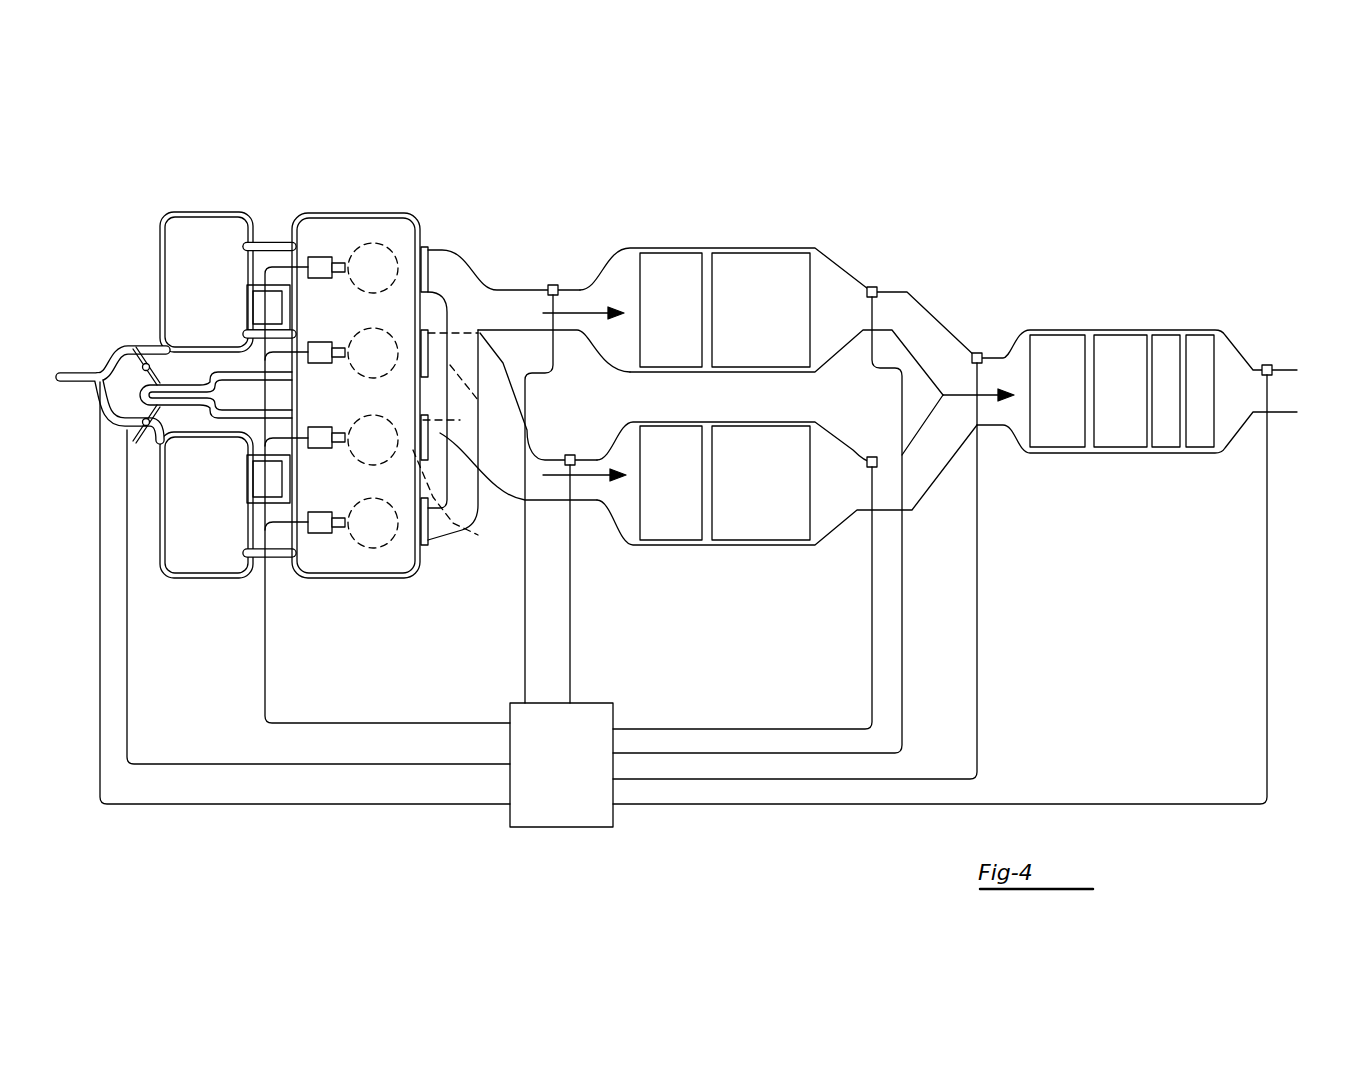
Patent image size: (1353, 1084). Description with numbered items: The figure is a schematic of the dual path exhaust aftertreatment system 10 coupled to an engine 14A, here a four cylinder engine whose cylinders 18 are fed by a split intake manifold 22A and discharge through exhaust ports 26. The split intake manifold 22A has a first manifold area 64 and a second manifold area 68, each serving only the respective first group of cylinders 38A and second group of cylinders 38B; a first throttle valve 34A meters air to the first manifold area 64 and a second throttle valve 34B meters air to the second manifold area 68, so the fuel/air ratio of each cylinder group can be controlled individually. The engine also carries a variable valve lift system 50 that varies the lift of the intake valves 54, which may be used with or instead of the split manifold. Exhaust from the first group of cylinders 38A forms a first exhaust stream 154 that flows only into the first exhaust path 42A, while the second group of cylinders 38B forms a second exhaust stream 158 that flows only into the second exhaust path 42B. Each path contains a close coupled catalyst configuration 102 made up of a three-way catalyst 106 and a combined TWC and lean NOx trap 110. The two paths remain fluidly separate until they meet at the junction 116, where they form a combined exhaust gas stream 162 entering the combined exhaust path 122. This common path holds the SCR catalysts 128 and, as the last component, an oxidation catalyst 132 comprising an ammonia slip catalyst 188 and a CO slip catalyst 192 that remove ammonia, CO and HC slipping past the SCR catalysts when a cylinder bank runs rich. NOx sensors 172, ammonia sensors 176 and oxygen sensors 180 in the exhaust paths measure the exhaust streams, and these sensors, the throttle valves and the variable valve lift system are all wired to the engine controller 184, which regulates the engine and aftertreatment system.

The dual path exhaust aftertreatment system 10 is at (1028, 168).
The engine 14A is at (310, 146).
The cylinders 18 is at (368, 243).
The split intake manifold 22A is at (176, 364).
The exhaust ports 26 is at (428, 270).
The first throttle valve 34A is at (157, 350).
The second throttle valve 34B is at (158, 447).
The first group of cylinders 38A is at (418, 216).
The second group of cylinders 38B is at (427, 315).
The first exhaust path 42A is at (614, 252).
The second exhaust path 42B is at (620, 555).
The variable valve lift system 50 is at (316, 257).
The intake valves 54 is at (343, 262).
The first manifold area 64 is at (215, 271).
The second manifold area 68 is at (219, 483).
The close coupled catalyst configuration 102 is at (752, 396).
The three-way catalyst 106 is at (668, 253).
The combined TWC and lean NOx trap 110 is at (737, 253).
The junction 116 is at (983, 407).
The combined exhaust path 122 is at (1112, 416).
The SCR catalysts 128 is at (1117, 332).
The oxidation catalyst 132 is at (1210, 418).
The first exhaust stream 154 is at (582, 310).
The second exhaust stream 158 is at (583, 480).
The combined exhaust gas stream 162 is at (963, 397).
The NOx sensors 172 is at (553, 283).
The ammonia sensors 176 is at (871, 285).
The oxygen sensors 180 is at (977, 351).
The engine controller 184 is at (561, 827).
The ammonia slip catalyst 188 is at (1165, 449).
The CO slip catalyst 192 is at (1197, 449).